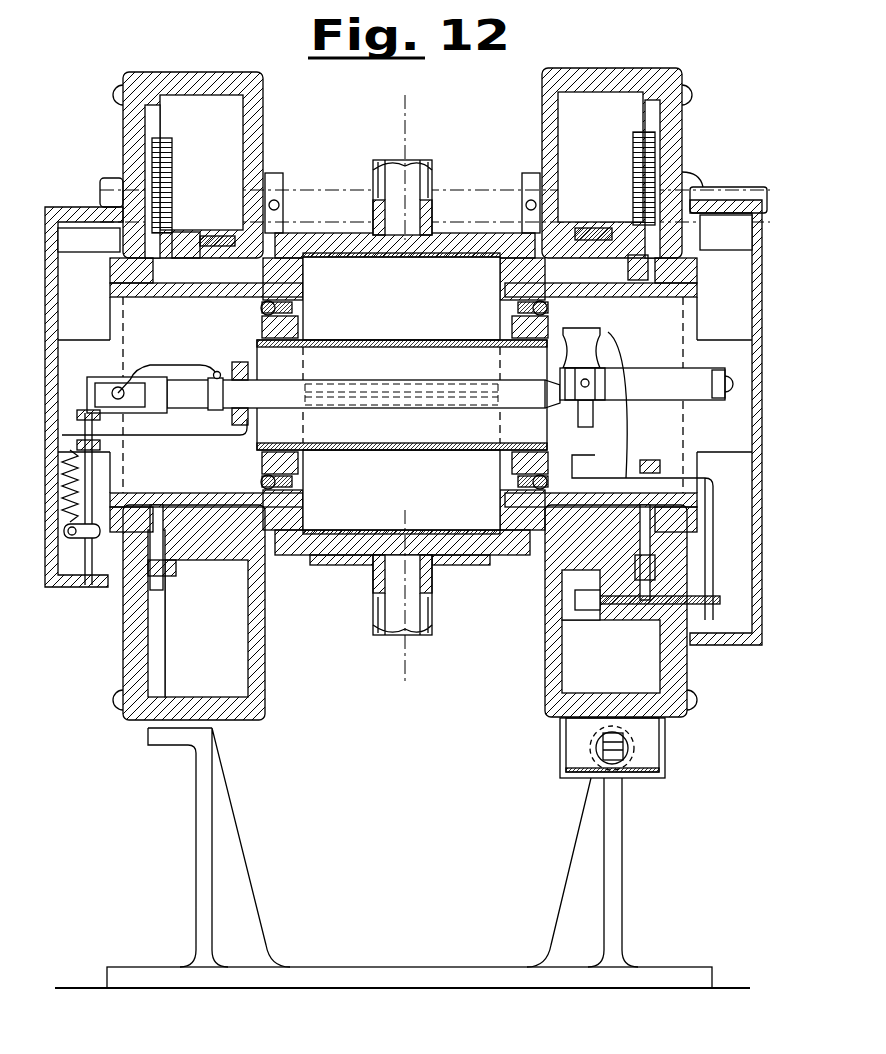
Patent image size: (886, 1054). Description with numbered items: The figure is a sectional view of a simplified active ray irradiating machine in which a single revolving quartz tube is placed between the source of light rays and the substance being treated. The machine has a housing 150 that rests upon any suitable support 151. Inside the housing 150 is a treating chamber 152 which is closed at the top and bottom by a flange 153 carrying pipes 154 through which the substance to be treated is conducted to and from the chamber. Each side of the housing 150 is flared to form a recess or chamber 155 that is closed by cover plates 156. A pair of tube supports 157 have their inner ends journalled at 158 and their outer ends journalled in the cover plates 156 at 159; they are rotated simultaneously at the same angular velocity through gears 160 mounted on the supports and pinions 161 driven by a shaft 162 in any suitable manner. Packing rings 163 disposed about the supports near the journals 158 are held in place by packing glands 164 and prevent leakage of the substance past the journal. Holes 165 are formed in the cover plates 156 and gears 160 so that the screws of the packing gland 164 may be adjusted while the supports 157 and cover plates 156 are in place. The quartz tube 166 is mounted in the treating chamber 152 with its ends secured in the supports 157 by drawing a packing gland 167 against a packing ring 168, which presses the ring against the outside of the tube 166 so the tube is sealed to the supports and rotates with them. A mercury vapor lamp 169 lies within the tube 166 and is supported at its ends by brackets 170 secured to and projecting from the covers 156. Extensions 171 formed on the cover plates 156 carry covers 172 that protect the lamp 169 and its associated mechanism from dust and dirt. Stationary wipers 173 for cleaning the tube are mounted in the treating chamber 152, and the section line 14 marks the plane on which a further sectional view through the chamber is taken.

The section line 14- 14 is at (407, 118).
The housing 150 is at (263, 108).
The support 151 is at (196, 790).
The treating chamber 152 is at (401, 393).
The flange 153 is at (315, 238).
The pipes 154 is at (432, 167).
The recess or chamber 155 is at (402, 394).
The cover plates 156 is at (123, 123).
The tube supports 157 is at (196, 294).
The inner journal 158 is at (303, 299).
The outer journal 159 is at (113, 293).
The gears 160 is at (175, 232).
The pinions 161 is at (162, 138).
The shaft 162 is at (292, 196).
The packing rings 163 is at (252, 302).
The packing glands 164 is at (606, 228).
The holes 165 is at (115, 247).
The quartz tube 166 is at (377, 347).
The packing gland 167 is at (262, 330).
The packing ring 168 is at (303, 325).
The mercury vapor lamp 169 is at (437, 380).
The brackets 170 is at (110, 380).
The extensions 171 is at (715, 200).
The covers 172 is at (48, 413).
The stationary wipers 173 is at (337, 406).